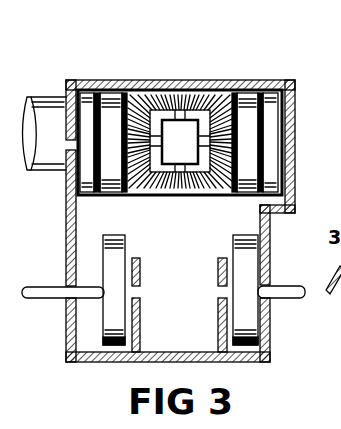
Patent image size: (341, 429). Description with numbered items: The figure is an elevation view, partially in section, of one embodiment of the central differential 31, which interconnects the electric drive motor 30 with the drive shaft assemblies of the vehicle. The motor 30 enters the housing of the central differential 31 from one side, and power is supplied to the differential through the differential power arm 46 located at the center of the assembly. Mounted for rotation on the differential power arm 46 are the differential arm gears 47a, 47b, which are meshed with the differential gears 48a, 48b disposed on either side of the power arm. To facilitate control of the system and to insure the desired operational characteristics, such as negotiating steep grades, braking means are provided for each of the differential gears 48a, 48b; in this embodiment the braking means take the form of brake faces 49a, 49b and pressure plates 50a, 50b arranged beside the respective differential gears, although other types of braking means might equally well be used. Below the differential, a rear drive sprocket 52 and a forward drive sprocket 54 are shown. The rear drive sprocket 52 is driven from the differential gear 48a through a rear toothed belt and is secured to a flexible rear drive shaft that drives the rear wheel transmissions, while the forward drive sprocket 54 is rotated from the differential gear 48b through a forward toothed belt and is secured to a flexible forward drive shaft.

The electric drive motor 30 is at (45, 133).
The central differential 31 is at (165, 80).
The differential power arm 46 is at (180, 141).
The differential arm gear 47a is at (200, 96).
The differential arm gear 47b is at (175, 194).
The differential gear 48a is at (234, 195).
The differential gear 48b is at (110, 92).
The brake face 49a is at (258, 92).
The brake face 49b is at (98, 195).
The pressure plate 50a is at (284, 100).
The pressure plate 50b is at (84, 90).
The rear drive sprocket 52 is at (124, 258).
The forward drive sprocket 54 is at (233, 242).